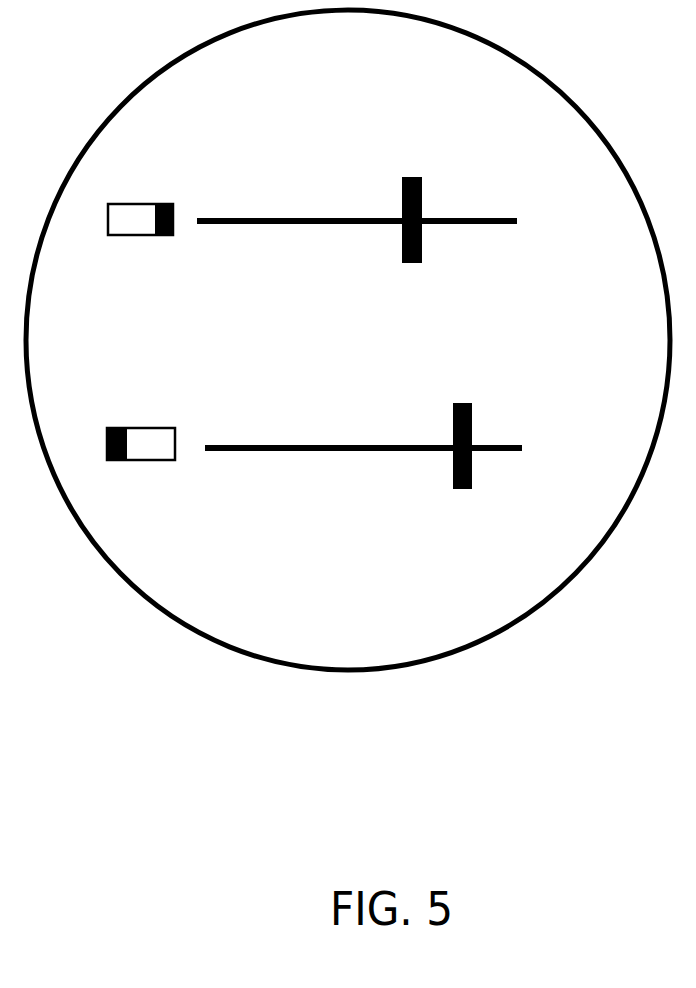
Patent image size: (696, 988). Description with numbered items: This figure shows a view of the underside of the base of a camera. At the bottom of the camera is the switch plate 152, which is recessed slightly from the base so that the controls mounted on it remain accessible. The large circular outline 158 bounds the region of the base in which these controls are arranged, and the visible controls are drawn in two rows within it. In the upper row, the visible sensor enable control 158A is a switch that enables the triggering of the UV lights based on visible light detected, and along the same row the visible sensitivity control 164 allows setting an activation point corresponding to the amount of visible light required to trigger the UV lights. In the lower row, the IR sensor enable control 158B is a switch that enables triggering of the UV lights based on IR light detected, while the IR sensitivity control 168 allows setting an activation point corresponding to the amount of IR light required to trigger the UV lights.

The switch plate 152 is at (342, 376).
The circular display region 158 is at (238, 622).
The visible sensor enable control 158A is at (138, 202).
The IR sensor enable control 158B is at (143, 428).
The visible sensitivity control 164 is at (412, 177).
The IR sensitivity control 168 is at (453, 463).